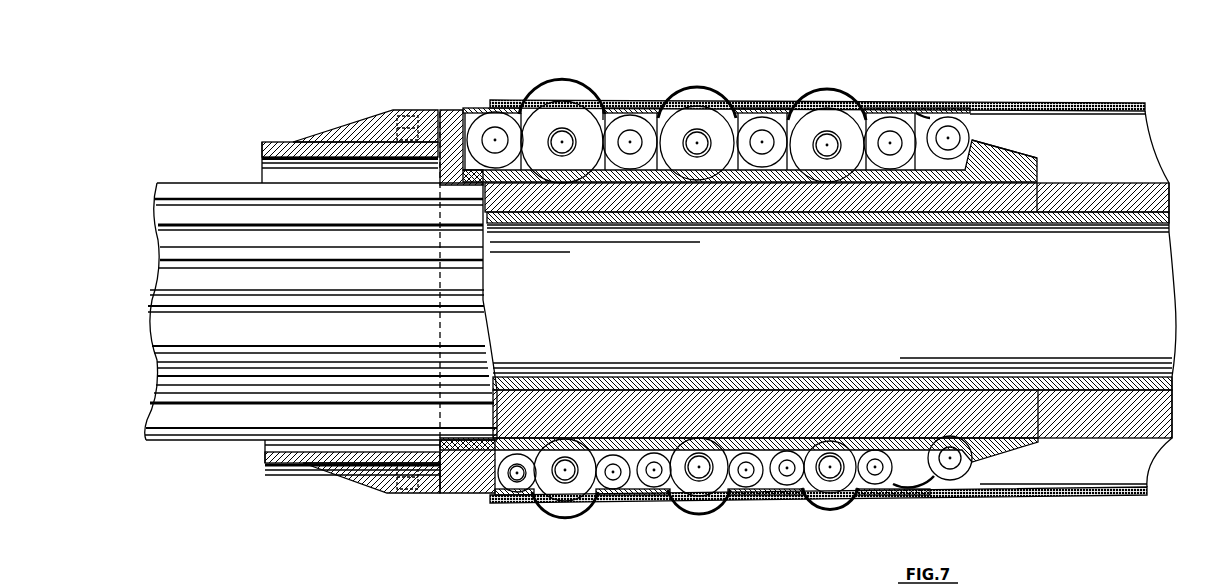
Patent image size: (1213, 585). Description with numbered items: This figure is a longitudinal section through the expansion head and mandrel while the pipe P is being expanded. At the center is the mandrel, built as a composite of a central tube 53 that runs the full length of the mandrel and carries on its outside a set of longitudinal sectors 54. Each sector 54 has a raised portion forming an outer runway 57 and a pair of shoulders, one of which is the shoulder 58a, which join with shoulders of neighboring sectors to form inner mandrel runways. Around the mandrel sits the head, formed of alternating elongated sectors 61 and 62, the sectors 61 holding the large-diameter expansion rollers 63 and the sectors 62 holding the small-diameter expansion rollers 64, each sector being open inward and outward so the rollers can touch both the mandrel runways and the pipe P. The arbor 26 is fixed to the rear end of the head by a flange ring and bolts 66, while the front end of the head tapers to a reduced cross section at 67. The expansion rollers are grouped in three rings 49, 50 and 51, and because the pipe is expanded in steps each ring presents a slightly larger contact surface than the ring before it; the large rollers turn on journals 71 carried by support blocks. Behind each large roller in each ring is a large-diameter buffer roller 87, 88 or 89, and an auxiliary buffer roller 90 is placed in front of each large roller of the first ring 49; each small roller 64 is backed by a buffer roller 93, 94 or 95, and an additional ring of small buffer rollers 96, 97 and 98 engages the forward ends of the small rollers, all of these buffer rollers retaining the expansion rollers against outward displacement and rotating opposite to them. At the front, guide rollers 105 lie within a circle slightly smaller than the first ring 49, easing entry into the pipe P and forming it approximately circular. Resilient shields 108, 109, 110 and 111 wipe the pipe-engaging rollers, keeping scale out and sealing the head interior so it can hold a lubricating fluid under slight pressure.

The arbor 26 is at (287, 143).
The first ring of expansion rollers 49 is at (832, 80).
The second ring of expansion rollers 50 is at (700, 80).
The third ring of expansion rollers 51 is at (562, 78).
The central tube 53 is at (1163, 215).
The longitudinal sector 54 is at (160, 190).
The outer runway 57 is at (1062, 438).
The shoulder 58a is at (1105, 180).
The expansion head sector 61 is at (1040, 176).
The expansion head sector 62 is at (1035, 441).
The large-diameter expansion roller 63 is at (838, 108).
The small-diameter expansion roller 64 is at (699, 488).
The bolts 66 is at (406, 118).
The tapered front end 67 is at (980, 143).
The journal 71 is at (556, 140).
The large-diameter buffer roller 87 is at (775, 104).
The large-diameter buffer roller 88 is at (638, 106).
The large-diameter buffer roller 89 is at (486, 122).
The auxiliary buffer roller 90 is at (893, 117).
The buffer roller 93 is at (782, 487).
The buffer roller 94 is at (653, 488).
The buffer roller 95 is at (513, 490).
The small buffer roller 96 is at (893, 490).
The small buffer roller 97 is at (748, 489).
The small buffer roller 98 is at (613, 490).
The guide roller 105 is at (960, 120).
The resilient shield 108 is at (920, 114).
The resilient shield 109 is at (732, 102).
The resilient shield 110 is at (604, 103).
The resilient shield 111 is at (457, 112).
The pipe P is at (1040, 103).